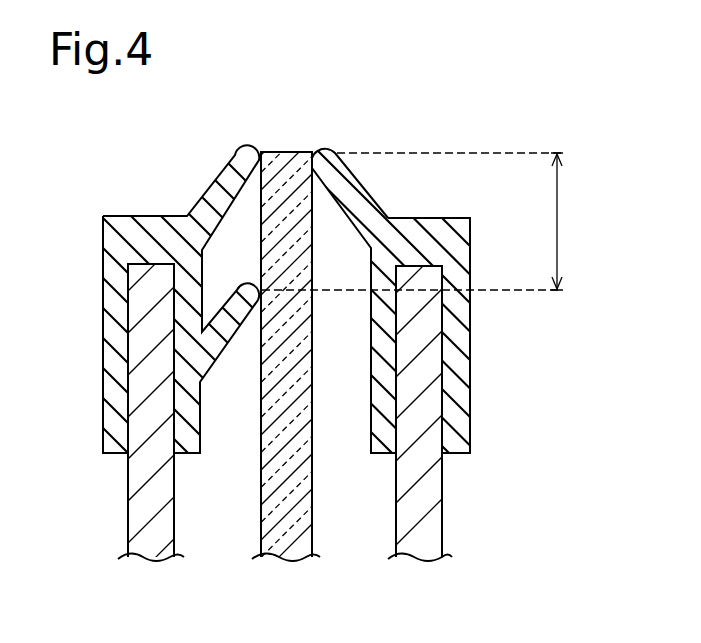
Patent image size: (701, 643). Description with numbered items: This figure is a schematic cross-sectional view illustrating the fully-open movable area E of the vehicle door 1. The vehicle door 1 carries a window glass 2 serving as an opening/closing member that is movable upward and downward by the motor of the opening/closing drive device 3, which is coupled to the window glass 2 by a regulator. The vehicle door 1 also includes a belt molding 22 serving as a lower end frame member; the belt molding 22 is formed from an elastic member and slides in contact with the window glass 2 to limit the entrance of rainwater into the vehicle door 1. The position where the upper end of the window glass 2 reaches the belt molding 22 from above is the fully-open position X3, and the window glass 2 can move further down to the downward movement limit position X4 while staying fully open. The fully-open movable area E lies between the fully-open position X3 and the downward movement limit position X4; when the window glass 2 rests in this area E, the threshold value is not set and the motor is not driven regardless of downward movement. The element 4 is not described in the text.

The vehicle door 1 is at (128, 480).
The window glass 2 is at (261, 466).
The belt molding 22 is at (213, 180).
The opening/closing drive device 3 is at (390, 309).
The right terminal pin 4 is at (415, 379).
The fully-open position X3 is at (528, 153).
The downward movement limit position X4 is at (512, 291).
The fully-open movable area E is at (560, 222).